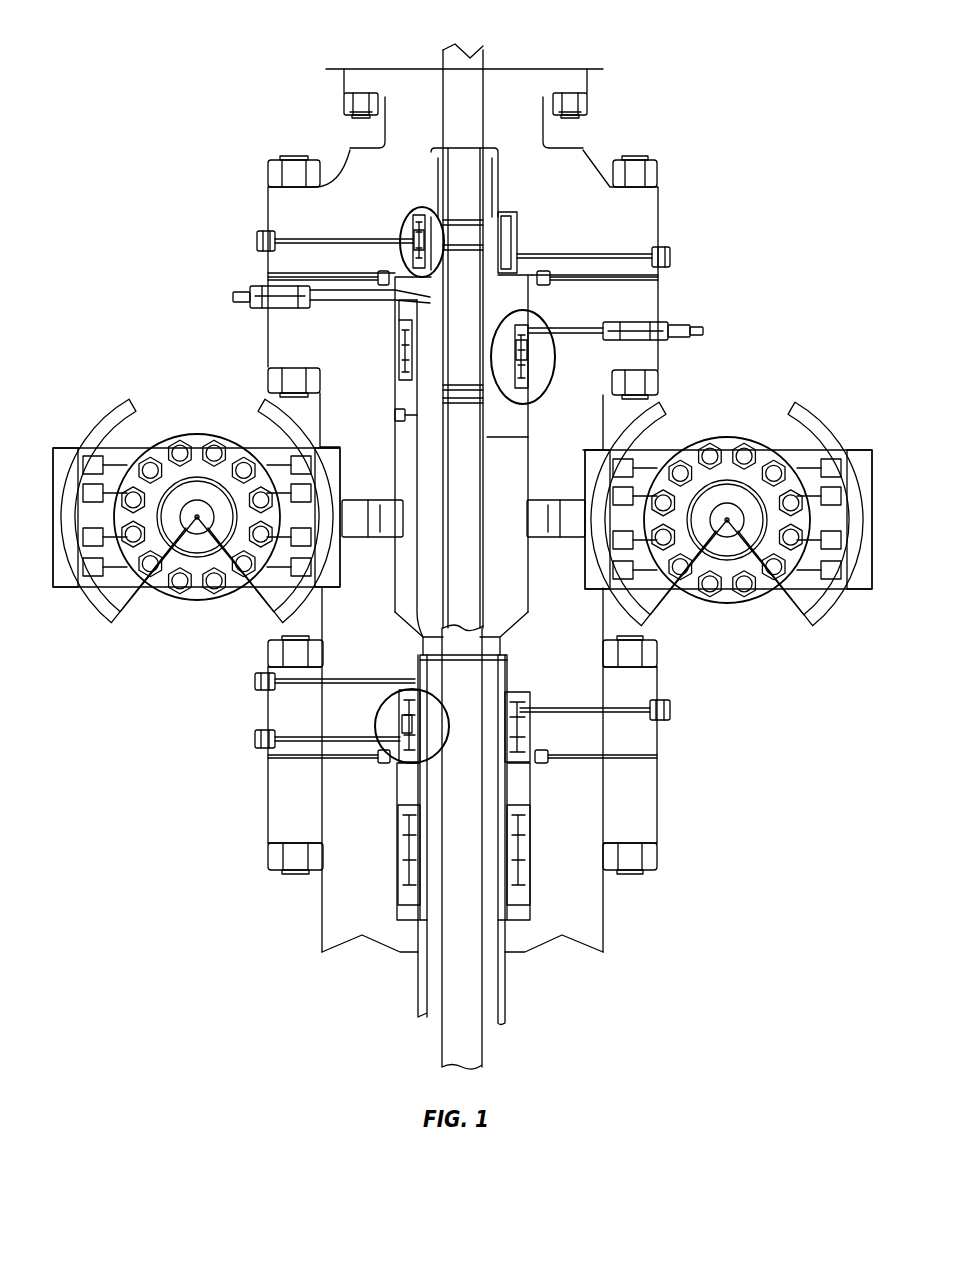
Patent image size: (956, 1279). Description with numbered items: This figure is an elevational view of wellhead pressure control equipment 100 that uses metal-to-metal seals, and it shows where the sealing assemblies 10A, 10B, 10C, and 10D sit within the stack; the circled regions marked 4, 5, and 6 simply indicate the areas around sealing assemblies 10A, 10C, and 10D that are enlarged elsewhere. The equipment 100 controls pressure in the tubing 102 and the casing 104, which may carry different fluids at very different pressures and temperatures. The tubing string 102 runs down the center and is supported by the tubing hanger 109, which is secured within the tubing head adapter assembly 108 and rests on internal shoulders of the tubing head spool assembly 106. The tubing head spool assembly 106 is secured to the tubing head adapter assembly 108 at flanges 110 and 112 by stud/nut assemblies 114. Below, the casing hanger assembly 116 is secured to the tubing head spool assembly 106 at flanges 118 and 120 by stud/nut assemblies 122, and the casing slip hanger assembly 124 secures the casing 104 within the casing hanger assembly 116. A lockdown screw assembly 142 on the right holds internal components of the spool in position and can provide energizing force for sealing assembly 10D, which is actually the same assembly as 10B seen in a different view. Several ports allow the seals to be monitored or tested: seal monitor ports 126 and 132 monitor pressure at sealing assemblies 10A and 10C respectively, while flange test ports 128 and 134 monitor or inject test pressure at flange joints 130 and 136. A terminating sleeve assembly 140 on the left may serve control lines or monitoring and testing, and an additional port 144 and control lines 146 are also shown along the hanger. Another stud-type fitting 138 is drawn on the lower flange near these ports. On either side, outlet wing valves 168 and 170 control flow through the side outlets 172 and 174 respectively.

The pressure control equipment 100 is at (203, 70).
The tubing 102 is at (462, 1030).
The casing 104 is at (420, 990).
The tubing head spool assembly 106 is at (575, 393).
The tubing head adapter assembly 108 is at (523, 142).
The tubing hanger 109 is at (430, 395).
The flange 110 is at (648, 352).
The flange 112 is at (650, 208).
The stud/nut assemblies 114 is at (657, 178).
The casing hanger assembly 116 is at (585, 920).
The flange 118 is at (650, 778).
The flange 120 is at (650, 686).
The stud/nut assemblies 122 is at (650, 858).
The casing slip hanger assembly 124 is at (532, 840).
The seal monitor port 126 is at (292, 243).
The flange test port 128 is at (640, 250).
The flange joint 130 is at (655, 280).
The seal monitor port 132 is at (580, 708).
The flange test port 134 is at (293, 735).
The flange joint 136 is at (270, 757).
The lockdown stud 138 is at (335, 678).
The terminating sleeve assembly 140 is at (250, 292).
The lockdown screw assembly 142 is at (645, 320).
The port 144 is at (395, 413).
The control lines 146 is at (412, 455).
The outlet wing valve 168 is at (197, 437).
The outlet wing valve 170 is at (727, 437).
The outlet 172 is at (372, 522).
The outlet 174 is at (540, 522).
The sealing assembly 10A is at (410, 212).
The sealing assembly 10B is at (380, 348).
The sealing assembly 10C is at (386, 710).
The sealing assembly 10D is at (530, 322).
The seal element (FIG. 4 detail) 4 is at (412, 235).
The seal element (FIG. 5 detail) 5 is at (372, 722).
The seal element (FIG. 6 detail) 6 is at (556, 368).